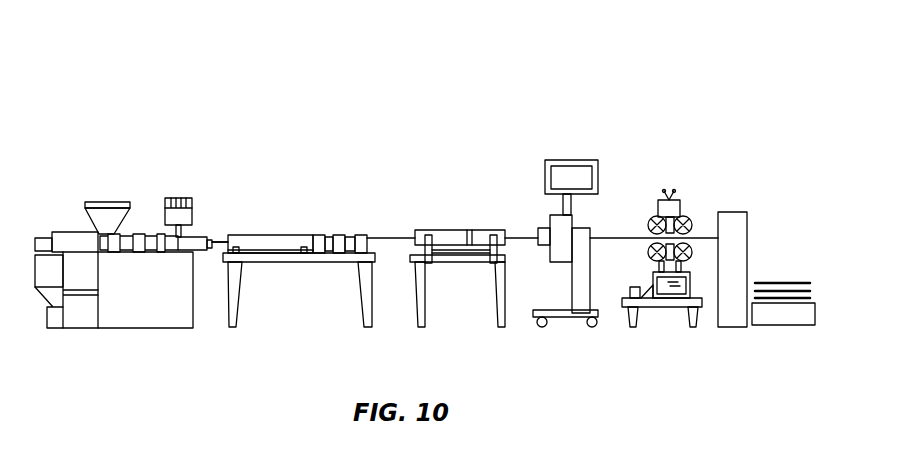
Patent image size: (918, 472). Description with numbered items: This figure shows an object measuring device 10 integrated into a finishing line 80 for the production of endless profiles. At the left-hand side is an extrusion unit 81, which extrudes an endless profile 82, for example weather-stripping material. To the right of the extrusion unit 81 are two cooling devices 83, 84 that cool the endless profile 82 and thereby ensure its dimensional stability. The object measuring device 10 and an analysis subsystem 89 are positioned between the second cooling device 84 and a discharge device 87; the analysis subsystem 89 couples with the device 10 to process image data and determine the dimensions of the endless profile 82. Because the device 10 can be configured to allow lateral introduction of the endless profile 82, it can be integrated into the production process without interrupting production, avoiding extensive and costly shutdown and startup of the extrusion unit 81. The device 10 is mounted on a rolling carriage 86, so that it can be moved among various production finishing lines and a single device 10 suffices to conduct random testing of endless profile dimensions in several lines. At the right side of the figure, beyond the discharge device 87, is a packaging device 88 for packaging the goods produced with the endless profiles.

The finishing line 80 is at (340, 73).
The extrusion unit 81 is at (119, 180).
The endless profile 82 is at (218, 237).
The cooling device 83 is at (293, 210).
The cooling device 84 is at (438, 210).
The object measuring device 10 is at (546, 222).
The analysis subsystem 89 is at (579, 160).
The rolling carriage 86 is at (561, 318).
The discharge device 87 is at (656, 188).
The packaging device 88 is at (771, 232).